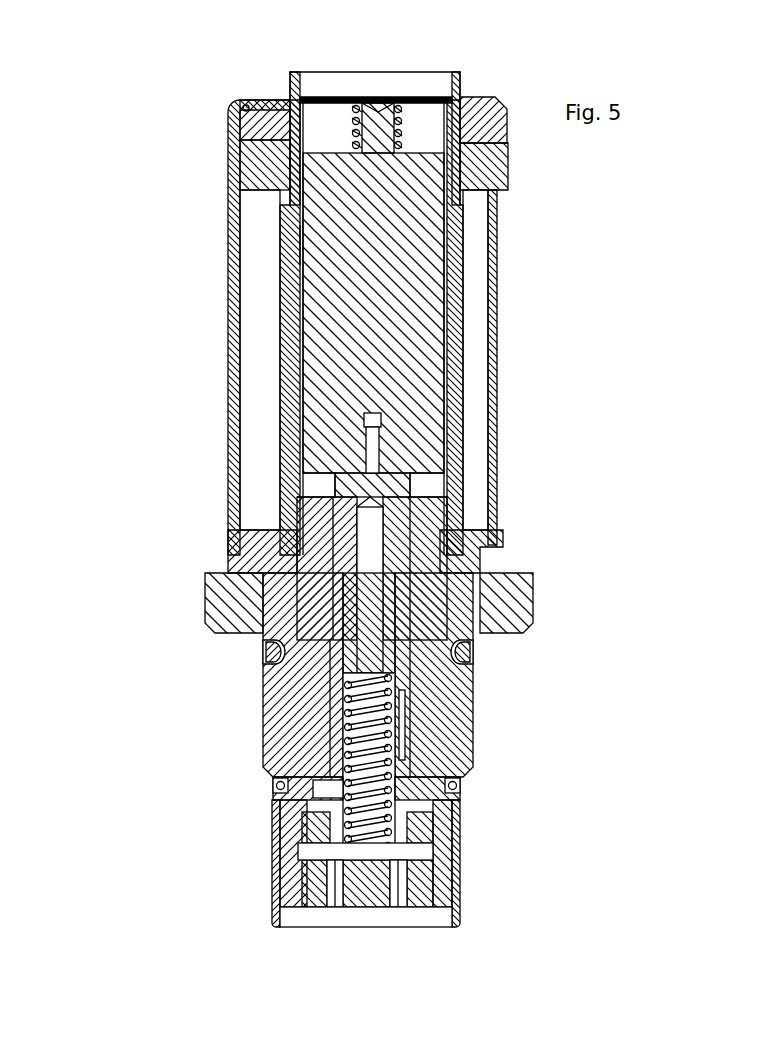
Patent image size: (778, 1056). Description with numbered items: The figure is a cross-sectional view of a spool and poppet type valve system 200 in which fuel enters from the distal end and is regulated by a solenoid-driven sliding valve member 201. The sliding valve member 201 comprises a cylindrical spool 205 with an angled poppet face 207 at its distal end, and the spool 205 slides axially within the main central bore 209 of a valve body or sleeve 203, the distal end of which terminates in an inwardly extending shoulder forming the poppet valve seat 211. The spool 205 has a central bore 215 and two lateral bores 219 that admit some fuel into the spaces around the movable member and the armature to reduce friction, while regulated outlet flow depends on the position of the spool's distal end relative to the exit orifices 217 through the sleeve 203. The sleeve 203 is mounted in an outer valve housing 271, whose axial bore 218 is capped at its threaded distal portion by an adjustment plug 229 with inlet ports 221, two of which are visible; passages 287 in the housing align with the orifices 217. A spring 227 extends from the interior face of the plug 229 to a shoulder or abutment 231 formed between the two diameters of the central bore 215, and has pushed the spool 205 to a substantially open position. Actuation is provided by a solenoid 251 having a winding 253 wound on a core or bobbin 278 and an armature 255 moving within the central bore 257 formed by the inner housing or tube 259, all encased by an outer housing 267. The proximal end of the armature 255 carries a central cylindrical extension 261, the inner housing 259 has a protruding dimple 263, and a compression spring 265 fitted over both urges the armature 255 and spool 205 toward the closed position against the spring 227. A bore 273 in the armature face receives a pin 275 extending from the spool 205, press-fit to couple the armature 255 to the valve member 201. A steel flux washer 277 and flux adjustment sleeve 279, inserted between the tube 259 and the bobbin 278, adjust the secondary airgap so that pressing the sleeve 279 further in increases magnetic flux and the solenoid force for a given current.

The valve system 200 is at (158, 86).
The sliding valve member 201 is at (405, 484).
The valve body or sleeve 203 is at (450, 692).
The cylindrical spool 205 is at (410, 732).
The angled poppet face 207 is at (465, 827).
The main central bore 209 is at (335, 730).
The poppet valve seat 211 is at (310, 800).
The central bore 215 is at (380, 610).
The exit orifices 217 is at (290, 790).
The axial bore 218 is at (460, 855).
The lateral bores 219 is at (415, 527).
The inlet ports 221 is at (405, 905).
The spring 227 is at (325, 862).
The adjustment plug 229 is at (460, 915).
The shoulder or abutment 231 is at (480, 657).
The solenoid 251 is at (226, 447).
The winding 253 is at (255, 338).
The armature 255 is at (415, 292).
The central bore 257 is at (290, 98).
The inner housing or tube 259 is at (300, 278).
The central cylindrical extension 261 is at (420, 96).
The protruding dimple 263 is at (366, 100).
The compression spring 265 is at (352, 100).
The outer housing 267 is at (228, 408).
The outer valve housing 271 is at (270, 677).
The bore 273 is at (382, 410).
The pin 275 is at (374, 432).
The flux washer 277 is at (508, 115).
The core or bobbin 278 is at (300, 245).
The flux adjustment sleeve 279 is at (460, 85).
The passages 287 is at (282, 792).